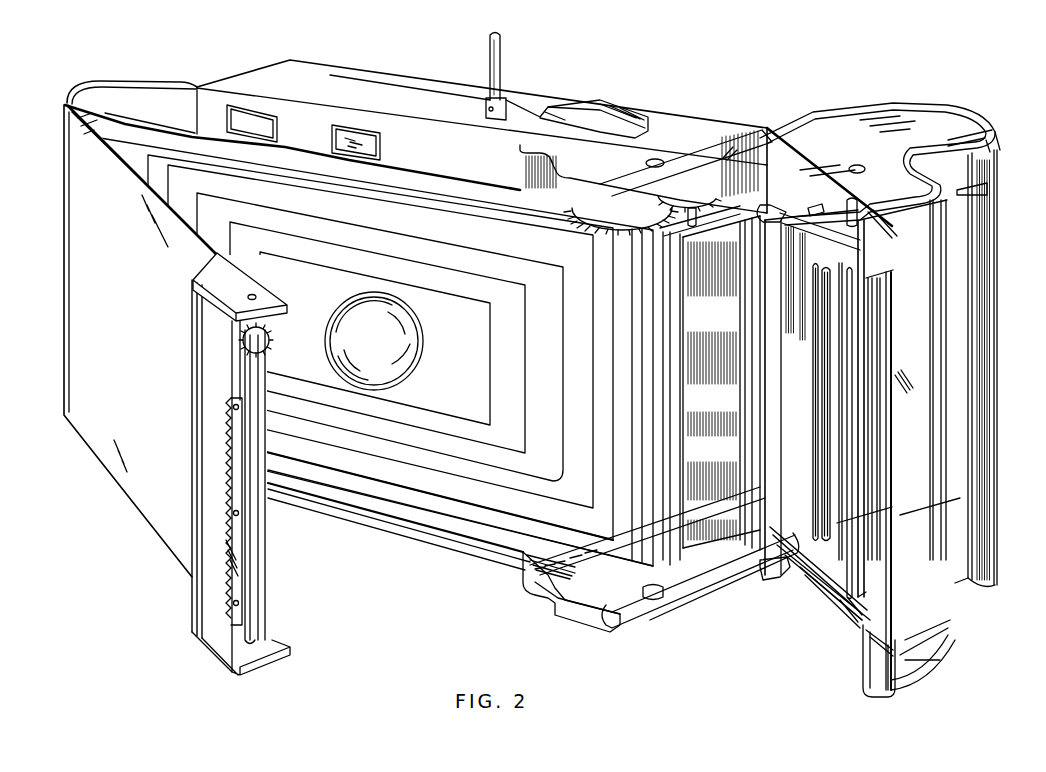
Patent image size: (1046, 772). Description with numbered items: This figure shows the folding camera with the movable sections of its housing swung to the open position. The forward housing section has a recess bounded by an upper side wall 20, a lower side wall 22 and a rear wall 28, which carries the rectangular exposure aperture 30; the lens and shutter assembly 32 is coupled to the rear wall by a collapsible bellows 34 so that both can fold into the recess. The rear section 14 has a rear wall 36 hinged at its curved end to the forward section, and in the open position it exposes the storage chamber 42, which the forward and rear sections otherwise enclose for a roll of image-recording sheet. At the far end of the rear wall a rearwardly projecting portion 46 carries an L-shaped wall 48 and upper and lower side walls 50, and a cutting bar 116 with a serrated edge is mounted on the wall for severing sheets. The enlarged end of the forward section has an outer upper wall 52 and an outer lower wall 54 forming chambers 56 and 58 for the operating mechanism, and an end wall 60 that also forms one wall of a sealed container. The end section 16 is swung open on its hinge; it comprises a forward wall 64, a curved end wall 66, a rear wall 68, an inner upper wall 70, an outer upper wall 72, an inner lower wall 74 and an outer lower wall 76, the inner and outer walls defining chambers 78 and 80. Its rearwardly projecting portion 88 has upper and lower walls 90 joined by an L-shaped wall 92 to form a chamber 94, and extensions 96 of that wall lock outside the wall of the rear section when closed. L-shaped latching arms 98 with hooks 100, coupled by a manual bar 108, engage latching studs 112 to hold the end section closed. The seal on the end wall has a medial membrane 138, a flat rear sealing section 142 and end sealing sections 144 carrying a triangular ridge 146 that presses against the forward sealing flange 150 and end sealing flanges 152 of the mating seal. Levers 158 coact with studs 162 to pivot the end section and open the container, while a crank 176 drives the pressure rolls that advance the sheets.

The rear section 14 is at (130, 510).
The end section 16 is at (962, 115).
The upper side wall 20 is at (158, 108).
The lower side wall 22 is at (430, 533).
The rear wall 28 is at (392, 500).
The exposure aperture 30 is at (550, 520).
The lens and shutter assembly 32 is at (397, 368).
The bellows 34 is at (537, 330).
The rear wall 36 is at (158, 407).
The storage chamber 42 is at (118, 144).
The rearwardly projecting portion 46 is at (207, 653).
The wall 48 is at (202, 612).
The upper and lower side walls 50 is at (213, 290).
The outer upper wall 52 is at (698, 128).
The outer lower wall 54 is at (583, 625).
The chamber 56 is at (767, 128).
The chamber 58 is at (533, 603).
The end wall 60 is at (677, 368).
The forward wall 64 is at (775, 131).
The curved end wall 66 is at (993, 207).
The rear wall 68 is at (870, 507).
The inner upper wall 70 is at (867, 205).
The outer upper wall 72 is at (970, 127).
The inner lower wall 74 is at (817, 610).
The outer lower wall 76 is at (793, 607).
The chamber 78 is at (838, 175).
The chamber 80 is at (837, 590).
The rearwardly projecting portion 88 is at (960, 647).
The upper and lower walls 90 is at (960, 149).
The L-shaped wall 92 is at (907, 660).
The chamber 94 is at (880, 360).
The extensions 96 is at (896, 269).
The latching arms 98 is at (850, 190).
The hook 100 is at (830, 195).
The bar 108 is at (975, 262).
The latching studs 112 is at (737, 150).
The cutting bar 116 is at (240, 590).
The medial membrane 138 is at (720, 456).
The rear sealing section 142 is at (677, 422).
The end sealing sections 144 is at (704, 240).
The projecting ridge 146 is at (753, 273).
The forward sealing flange 150 is at (770, 530).
The end sealing flanges 152 is at (847, 627).
The levers 158 is at (678, 173).
The studs 162 is at (992, 143).
The crank 176 is at (570, 117).